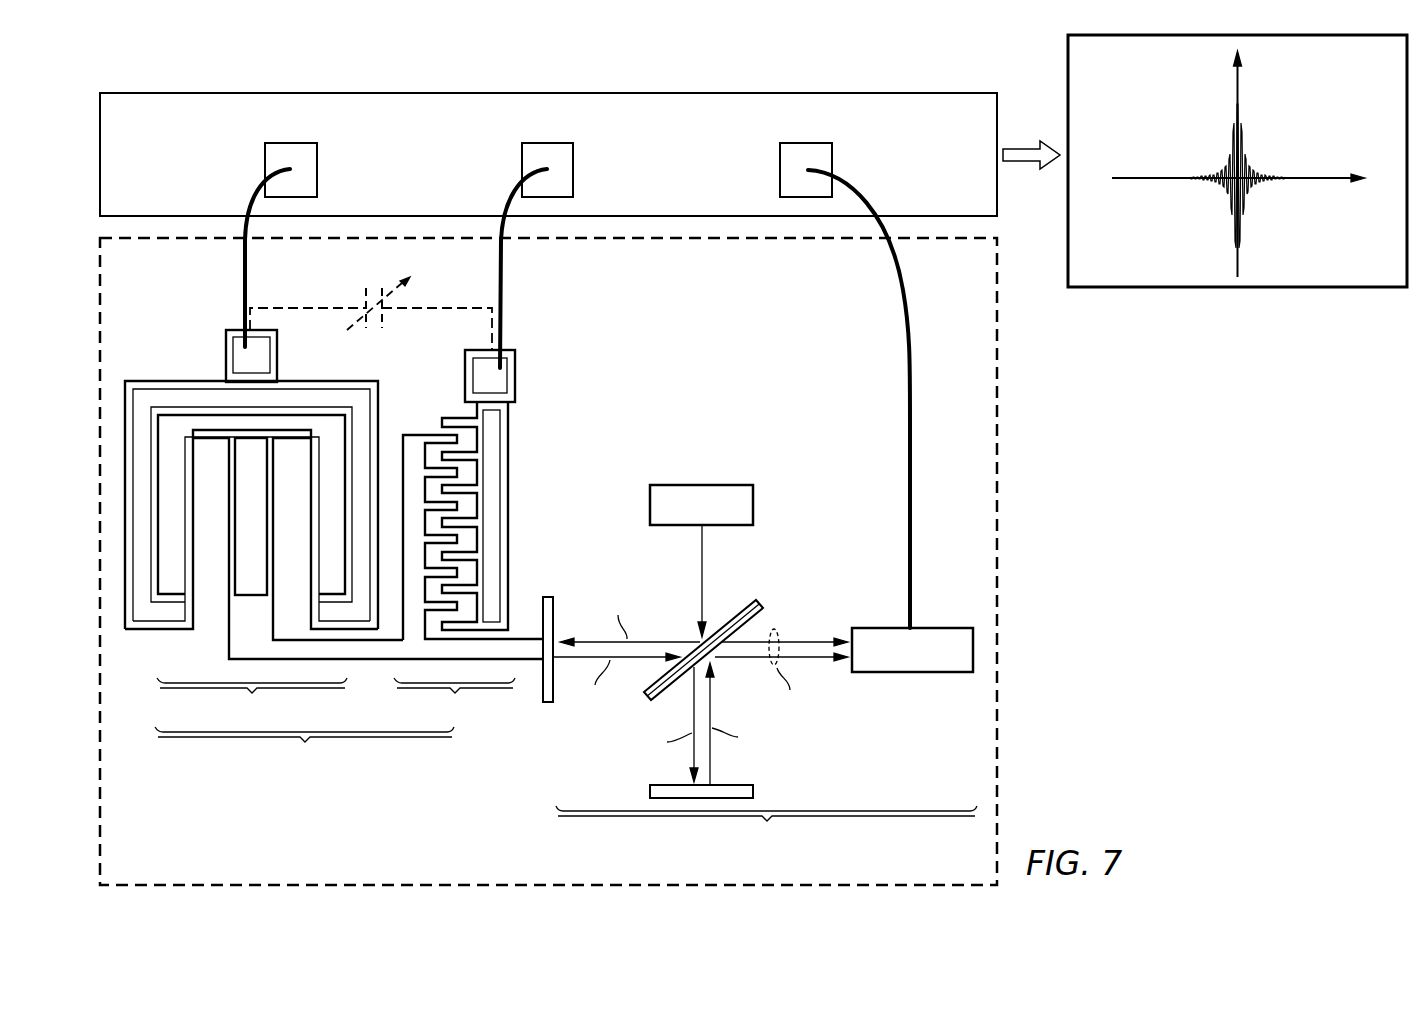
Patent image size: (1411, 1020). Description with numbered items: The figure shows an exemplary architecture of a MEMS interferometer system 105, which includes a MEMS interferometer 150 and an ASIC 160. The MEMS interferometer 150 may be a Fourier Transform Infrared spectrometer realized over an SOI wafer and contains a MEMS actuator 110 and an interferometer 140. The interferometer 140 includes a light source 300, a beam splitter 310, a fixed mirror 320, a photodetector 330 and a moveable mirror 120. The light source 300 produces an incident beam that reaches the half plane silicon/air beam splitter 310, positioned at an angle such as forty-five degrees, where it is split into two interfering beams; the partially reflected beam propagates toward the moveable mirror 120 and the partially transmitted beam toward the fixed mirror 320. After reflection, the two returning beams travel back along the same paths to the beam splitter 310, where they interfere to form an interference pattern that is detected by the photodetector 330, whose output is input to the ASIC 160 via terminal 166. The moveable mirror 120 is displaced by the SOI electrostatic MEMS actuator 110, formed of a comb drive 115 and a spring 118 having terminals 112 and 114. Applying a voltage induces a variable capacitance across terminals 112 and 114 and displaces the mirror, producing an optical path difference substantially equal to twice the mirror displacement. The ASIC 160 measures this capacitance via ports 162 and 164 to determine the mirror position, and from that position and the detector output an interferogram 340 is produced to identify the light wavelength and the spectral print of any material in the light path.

The MEMS interferometer system 105 is at (1195, 655).
The electrostatic comb drive MEMS actuator 110 is at (334, 551).
The terminal 112 is at (465, 377).
The terminal 114 is at (226, 355).
The comb drive 115 is at (468, 536).
The spring 118 is at (334, 526).
The moveable mirror 120 is at (549, 597).
The interferometer 140 is at (765, 679).
The MEMS interferometer 150 is at (1005, 396).
The ASIC 160 is at (392, 90).
The port 162 is at (522, 160).
The port 164 is at (265, 160).
The terminal 166 is at (833, 162).
The light source 300 is at (757, 503).
The beam splitter 310 is at (760, 600).
The fixed mirror 320 is at (757, 790).
The photodetector 330 is at (927, 672).
The interferogram 340 is at (1068, 72).